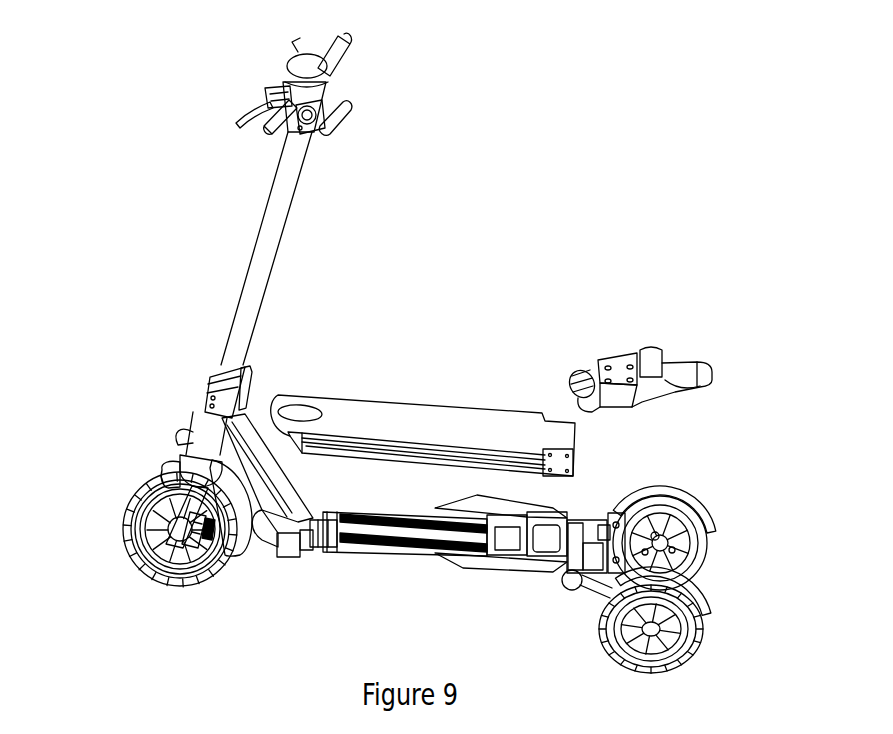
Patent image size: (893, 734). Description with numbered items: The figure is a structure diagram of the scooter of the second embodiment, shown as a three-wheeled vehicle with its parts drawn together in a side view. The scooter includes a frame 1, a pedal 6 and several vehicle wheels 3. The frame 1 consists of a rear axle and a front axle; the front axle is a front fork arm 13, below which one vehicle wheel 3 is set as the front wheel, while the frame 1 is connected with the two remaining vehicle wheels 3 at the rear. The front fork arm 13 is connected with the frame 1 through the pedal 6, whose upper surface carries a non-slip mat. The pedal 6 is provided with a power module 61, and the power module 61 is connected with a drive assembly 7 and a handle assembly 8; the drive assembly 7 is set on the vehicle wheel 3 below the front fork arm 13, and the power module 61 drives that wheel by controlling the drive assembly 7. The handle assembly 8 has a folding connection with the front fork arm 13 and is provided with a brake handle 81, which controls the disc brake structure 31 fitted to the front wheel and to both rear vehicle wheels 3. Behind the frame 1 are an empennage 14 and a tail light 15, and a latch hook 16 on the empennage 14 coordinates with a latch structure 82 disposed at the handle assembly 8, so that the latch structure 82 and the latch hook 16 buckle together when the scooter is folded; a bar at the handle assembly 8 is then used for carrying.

The frame 1 is at (570, 532).
The vehicle wheels 3 is at (210, 583).
The pedal 6 is at (412, 422).
The drive assembly 7 is at (130, 495).
The handle assembly 8 is at (288, 213).
The front fork arm 13 is at (198, 480).
The empennage 14 is at (613, 375).
The tail light 15 is at (703, 525).
The latch hook 16 is at (573, 368).
The disc brake structure 31 is at (127, 541).
The power module 61 is at (393, 540).
The brake handle 81 is at (247, 110).
The latch structure 82 is at (347, 117).